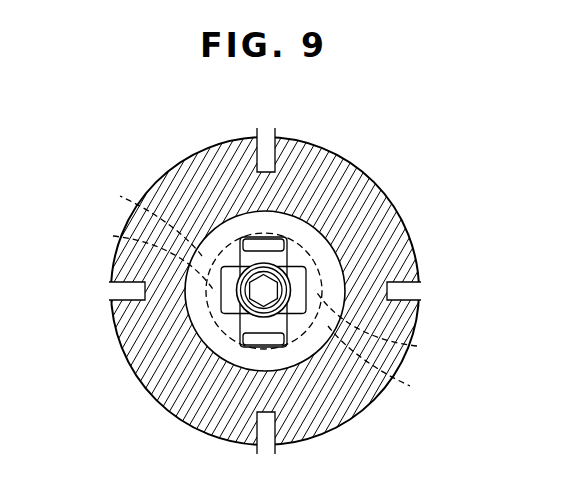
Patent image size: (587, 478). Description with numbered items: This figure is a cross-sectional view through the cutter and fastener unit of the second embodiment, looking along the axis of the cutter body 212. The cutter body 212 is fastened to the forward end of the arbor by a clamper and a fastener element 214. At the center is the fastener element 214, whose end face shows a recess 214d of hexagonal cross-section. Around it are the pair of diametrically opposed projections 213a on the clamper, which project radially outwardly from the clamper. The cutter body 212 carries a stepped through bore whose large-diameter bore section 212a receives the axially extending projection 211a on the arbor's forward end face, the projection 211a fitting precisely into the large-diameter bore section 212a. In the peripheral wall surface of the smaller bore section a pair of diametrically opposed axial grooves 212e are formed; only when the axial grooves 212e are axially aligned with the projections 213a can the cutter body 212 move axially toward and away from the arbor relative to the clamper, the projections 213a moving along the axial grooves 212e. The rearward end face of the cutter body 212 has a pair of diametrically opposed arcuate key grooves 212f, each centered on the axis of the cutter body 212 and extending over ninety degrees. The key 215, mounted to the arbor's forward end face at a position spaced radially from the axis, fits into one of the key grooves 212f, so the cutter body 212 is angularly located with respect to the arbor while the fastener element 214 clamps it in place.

The cutter body 212 is at (322, 141).
The large-diameter bore section 212a is at (150, 185).
The axial grooves 212e is at (284, 240).
The key grooves 212f is at (113, 236).
The projection 211a is at (262, 243).
The projections 213a is at (307, 270).
The fastener element 214 is at (290, 277).
The recess 214d is at (274, 302).
The key 215 is at (176, 307).